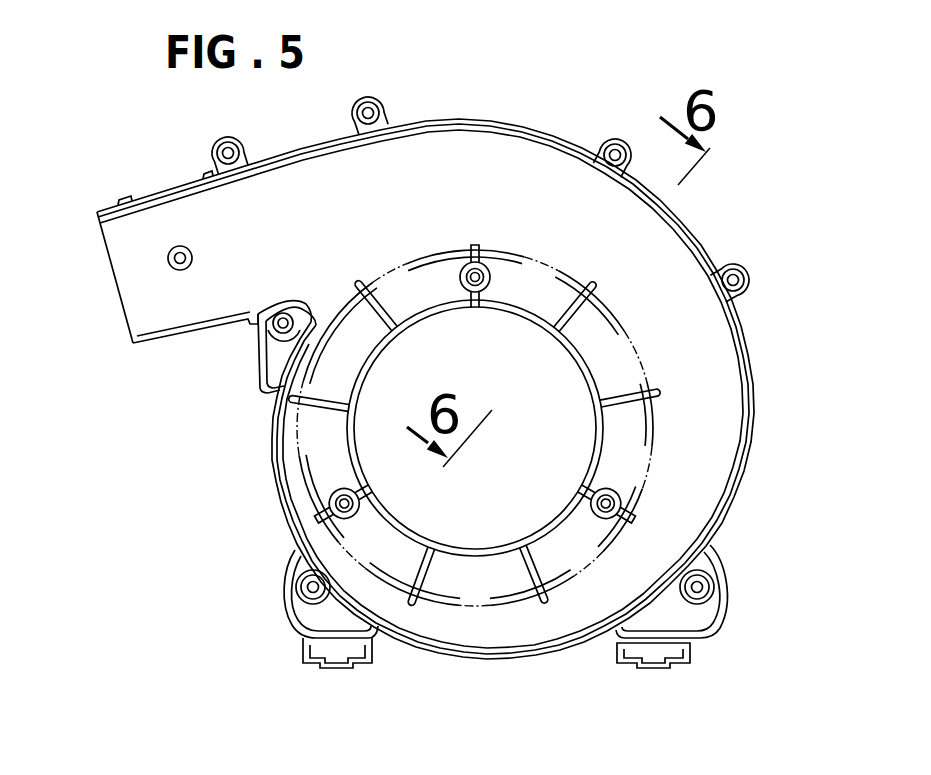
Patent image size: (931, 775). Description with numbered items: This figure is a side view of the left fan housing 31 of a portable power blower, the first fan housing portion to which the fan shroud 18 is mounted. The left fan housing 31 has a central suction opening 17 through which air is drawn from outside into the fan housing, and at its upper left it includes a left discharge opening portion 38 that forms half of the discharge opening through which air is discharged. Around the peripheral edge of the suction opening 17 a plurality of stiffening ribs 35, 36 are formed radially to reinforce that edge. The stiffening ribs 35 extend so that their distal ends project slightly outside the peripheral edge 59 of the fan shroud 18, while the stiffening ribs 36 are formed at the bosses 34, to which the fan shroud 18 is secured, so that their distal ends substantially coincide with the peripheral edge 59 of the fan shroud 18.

The left fan housing 31 is at (173, 162).
The left discharge opening portion 38 is at (116, 287).
The suction opening 17 is at (527, 315).
The fan shroud 18 is at (622, 308).
The peripheral edge of the fan shroud 59 is at (647, 358).
The boss 34 is at (460, 270).
The stiffening rib 35 is at (598, 281).
The stiffening rib 36 is at (473, 247).